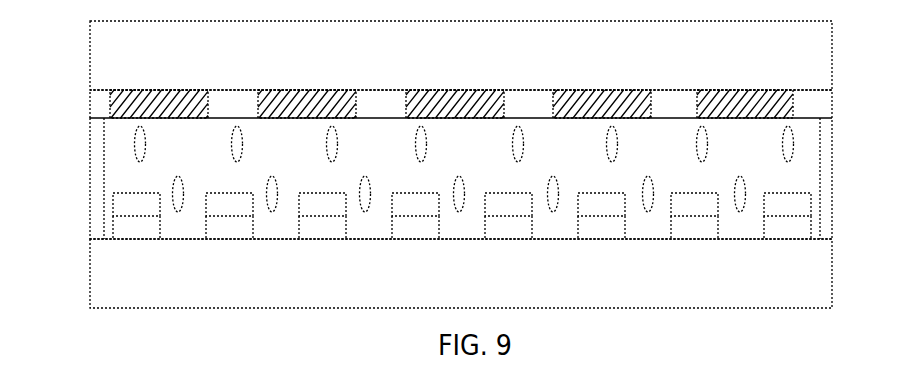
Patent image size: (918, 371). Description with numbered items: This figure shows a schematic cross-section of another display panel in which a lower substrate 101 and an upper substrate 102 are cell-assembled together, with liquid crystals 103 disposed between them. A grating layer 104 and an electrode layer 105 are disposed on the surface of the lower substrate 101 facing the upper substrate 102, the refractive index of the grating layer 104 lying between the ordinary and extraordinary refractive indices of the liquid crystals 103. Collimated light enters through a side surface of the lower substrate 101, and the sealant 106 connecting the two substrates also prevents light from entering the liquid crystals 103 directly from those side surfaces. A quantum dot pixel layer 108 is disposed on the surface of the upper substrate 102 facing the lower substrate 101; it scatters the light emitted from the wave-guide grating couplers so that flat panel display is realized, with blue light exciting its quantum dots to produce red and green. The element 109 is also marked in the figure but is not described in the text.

The lower substrate 101 is at (832, 298).
The upper substrate 102 is at (832, 63).
The liquid crystals 103 is at (795, 151).
The grating layer 104 is at (811, 222).
The electrode layer 105 is at (811, 201).
The sealant 106 is at (822, 172).
The quantum dot pixel layer 108 is at (793, 98).
The transparent region 109 is at (90, 104).